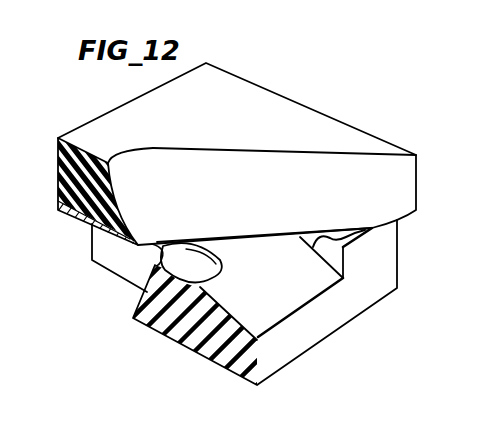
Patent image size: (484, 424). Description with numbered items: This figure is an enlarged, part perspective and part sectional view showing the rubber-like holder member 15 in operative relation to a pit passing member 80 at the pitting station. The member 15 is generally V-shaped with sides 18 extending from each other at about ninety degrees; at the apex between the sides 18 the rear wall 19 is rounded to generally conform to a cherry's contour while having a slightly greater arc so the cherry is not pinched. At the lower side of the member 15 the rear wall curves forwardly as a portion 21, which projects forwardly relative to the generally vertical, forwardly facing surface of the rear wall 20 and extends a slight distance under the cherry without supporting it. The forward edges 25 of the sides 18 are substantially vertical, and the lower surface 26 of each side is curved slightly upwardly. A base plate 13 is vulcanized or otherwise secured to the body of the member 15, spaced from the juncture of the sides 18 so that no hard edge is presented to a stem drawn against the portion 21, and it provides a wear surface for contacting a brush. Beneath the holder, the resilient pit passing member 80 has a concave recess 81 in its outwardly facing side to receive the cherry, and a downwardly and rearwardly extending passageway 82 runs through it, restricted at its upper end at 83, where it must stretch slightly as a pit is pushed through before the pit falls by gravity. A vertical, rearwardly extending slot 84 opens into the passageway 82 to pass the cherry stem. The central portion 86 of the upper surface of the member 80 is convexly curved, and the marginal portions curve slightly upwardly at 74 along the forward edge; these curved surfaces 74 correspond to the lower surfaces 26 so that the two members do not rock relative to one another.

The base plate 13 is at (72, 217).
The member 15 is at (303, 104).
The sides 18 is at (275, 192).
The rear wall 19 is at (60, 176).
The rear wall 20 is at (114, 183).
The portion 21 is at (136, 243).
The forward edges 25 is at (418, 187).
The lower surface 26 is at (398, 222).
The curved surfaces 74 is at (312, 250).
The pit passing member 80 is at (305, 332).
The concave recess 81 is at (199, 278).
The passageway 82 is at (145, 272).
The restricted portion 83 is at (157, 241).
The slot 84 is at (108, 259).
The central portion 86 is at (222, 305).